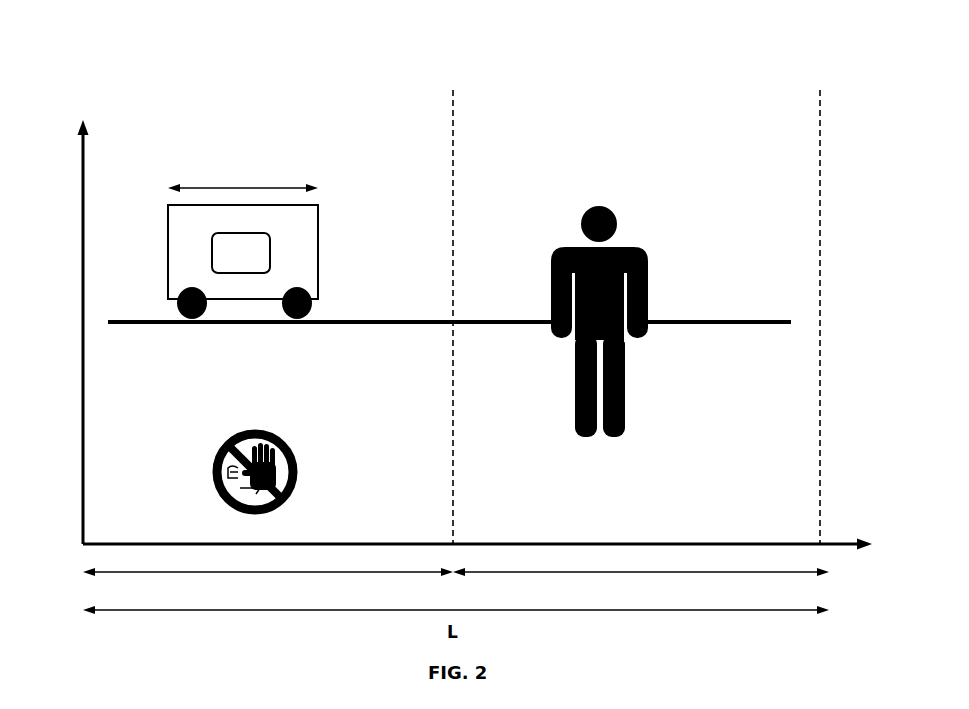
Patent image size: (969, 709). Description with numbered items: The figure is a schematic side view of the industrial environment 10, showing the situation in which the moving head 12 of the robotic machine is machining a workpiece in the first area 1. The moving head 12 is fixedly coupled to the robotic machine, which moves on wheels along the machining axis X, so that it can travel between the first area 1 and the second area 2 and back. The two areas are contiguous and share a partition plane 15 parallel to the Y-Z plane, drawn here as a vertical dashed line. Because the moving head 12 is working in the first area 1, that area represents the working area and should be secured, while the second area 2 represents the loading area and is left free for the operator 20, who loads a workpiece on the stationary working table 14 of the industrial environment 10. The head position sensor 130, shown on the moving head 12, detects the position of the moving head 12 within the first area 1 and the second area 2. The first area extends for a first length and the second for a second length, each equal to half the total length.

The industrial environment 10 is at (142, 120).
The first area 1 is at (430, 130).
The second area 2 is at (772, 130).
The moving head 12 is at (279, 251).
The head position sensor 130 is at (258, 266).
The working table 14 is at (400, 324).
The partition plane 15 is at (454, 178).
The operator 20 is at (647, 258).